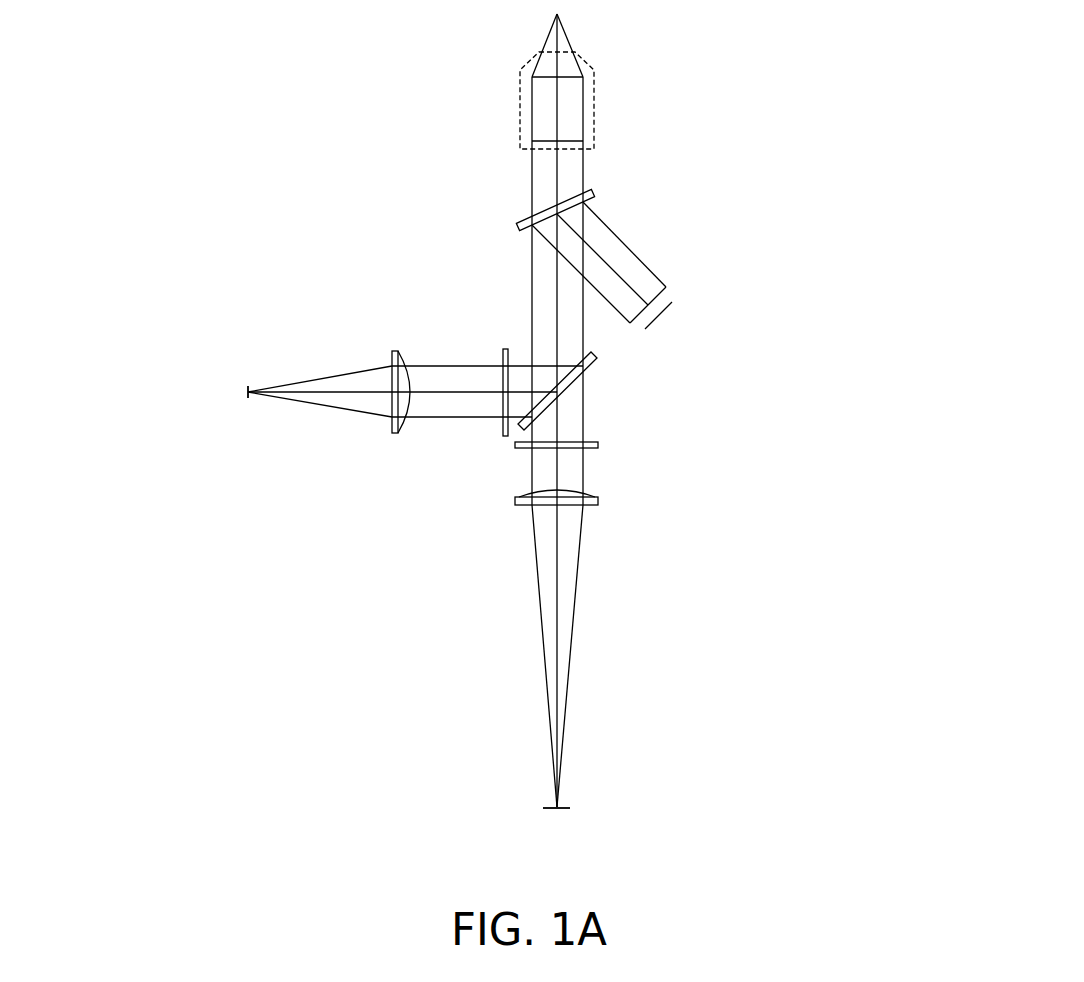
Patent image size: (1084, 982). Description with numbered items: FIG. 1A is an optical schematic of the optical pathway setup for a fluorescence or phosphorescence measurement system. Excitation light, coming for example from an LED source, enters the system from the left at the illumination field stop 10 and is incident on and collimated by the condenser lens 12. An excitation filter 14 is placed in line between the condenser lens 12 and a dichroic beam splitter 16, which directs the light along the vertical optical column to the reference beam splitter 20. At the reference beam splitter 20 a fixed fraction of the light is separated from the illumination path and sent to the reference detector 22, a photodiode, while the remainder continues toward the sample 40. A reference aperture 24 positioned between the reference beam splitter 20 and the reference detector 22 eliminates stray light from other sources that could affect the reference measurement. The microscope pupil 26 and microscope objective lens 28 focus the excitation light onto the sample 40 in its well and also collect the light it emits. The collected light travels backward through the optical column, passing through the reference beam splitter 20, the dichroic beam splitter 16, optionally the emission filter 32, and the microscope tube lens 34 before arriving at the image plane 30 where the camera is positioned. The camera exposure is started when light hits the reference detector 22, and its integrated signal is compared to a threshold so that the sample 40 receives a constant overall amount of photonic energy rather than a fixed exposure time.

The sample 40 is at (558, 15).
The microscope objective lens 28 is at (521, 82).
The microscope pupil 26 is at (540, 141).
The reference beam splitter 20 is at (596, 196).
The reference aperture 24 is at (667, 293).
The reference detector 22 is at (665, 312).
The illumination field stop 10 is at (248, 394).
The condenser lens 12 is at (396, 434).
The excitation filter 14 is at (503, 360).
The dichroic beam splitter 16 is at (597, 360).
The emission filter 32 is at (598, 445).
The microscope tube lens 34 is at (598, 501).
The image plane 30 is at (562, 808).